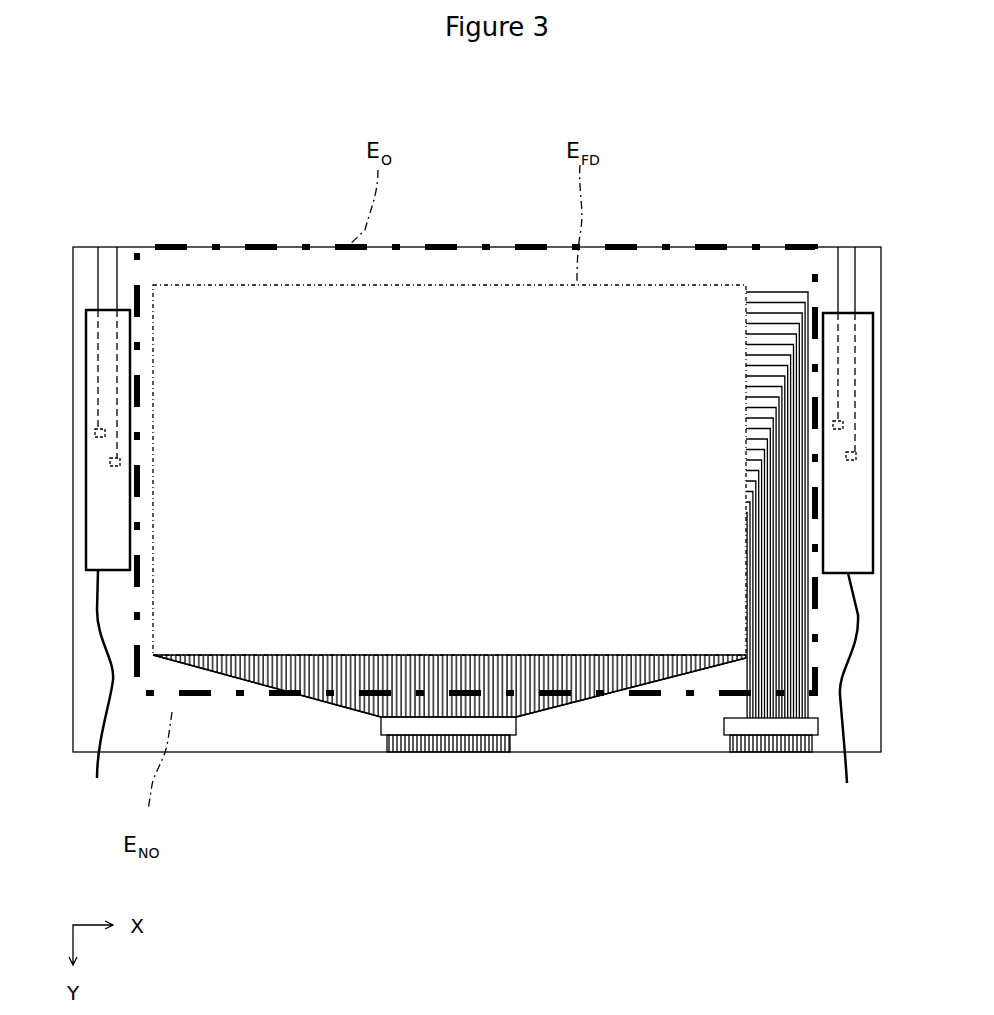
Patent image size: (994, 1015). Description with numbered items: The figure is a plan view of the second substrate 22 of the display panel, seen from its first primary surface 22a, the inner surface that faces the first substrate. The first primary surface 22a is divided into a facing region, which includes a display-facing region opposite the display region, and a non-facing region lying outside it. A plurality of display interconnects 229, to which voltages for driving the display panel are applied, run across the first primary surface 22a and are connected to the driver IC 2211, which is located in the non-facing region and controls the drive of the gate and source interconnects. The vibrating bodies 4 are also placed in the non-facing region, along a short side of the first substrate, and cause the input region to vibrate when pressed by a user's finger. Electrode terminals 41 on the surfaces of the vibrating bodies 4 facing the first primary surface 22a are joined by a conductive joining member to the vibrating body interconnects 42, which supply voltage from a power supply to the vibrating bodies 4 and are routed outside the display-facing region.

The second substrate 22 is at (458, 178).
The first primary surface 22a is at (223, 715).
The display interconnects 229 is at (302, 655).
The driver IC 2211 is at (508, 720).
The vibrating body interconnects 42 is at (101, 252).
The electrode terminals 41 is at (98, 436).
The vibrating bodies 4 is at (474, 689).